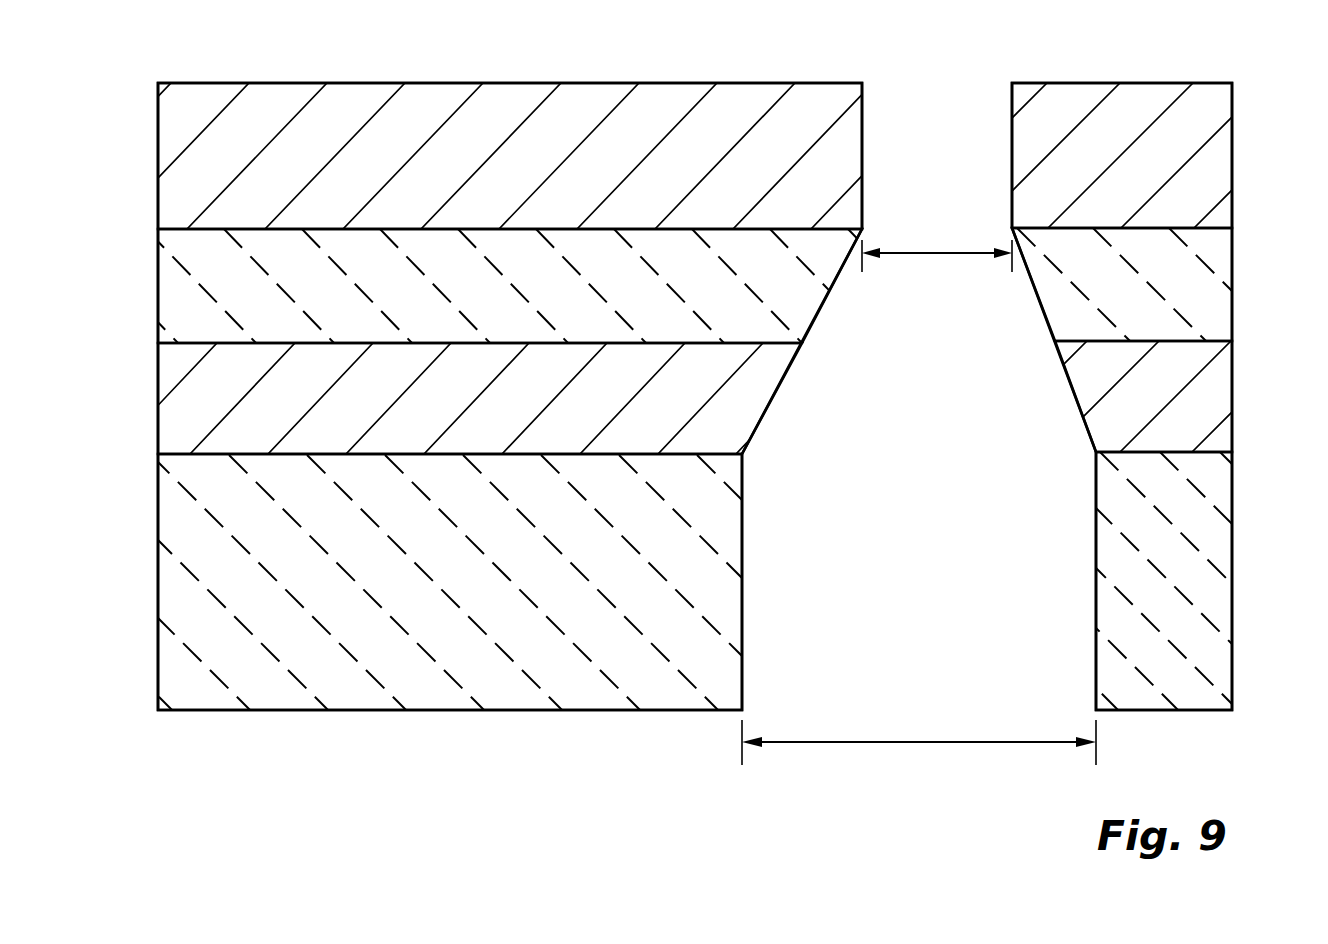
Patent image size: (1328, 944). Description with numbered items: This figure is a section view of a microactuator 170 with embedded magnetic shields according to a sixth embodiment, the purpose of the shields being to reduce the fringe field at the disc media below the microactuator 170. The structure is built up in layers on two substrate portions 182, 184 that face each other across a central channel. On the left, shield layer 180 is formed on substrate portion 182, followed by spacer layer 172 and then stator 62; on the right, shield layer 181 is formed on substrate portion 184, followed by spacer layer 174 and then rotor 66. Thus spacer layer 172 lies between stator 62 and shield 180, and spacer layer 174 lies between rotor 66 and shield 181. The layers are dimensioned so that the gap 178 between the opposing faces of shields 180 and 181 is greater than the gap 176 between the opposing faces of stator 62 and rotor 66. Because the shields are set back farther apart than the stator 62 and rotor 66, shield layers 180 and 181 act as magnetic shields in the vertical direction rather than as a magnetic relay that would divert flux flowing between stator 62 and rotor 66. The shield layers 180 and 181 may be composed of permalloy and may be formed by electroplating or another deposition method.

The microactuator 170 is at (172, 55).
The stator 62 is at (862, 103).
The rotor 66 is at (1232, 102).
The spacer layer 172 is at (832, 290).
The spacer layer 174 is at (1232, 266).
The gap 176 is at (917, 252).
The gap 178 is at (903, 742).
The shield layer 180 is at (158, 415).
The shield layer 181 is at (1232, 380).
The substrate portion 182 is at (743, 535).
The substrate portion 184 is at (1096, 546).